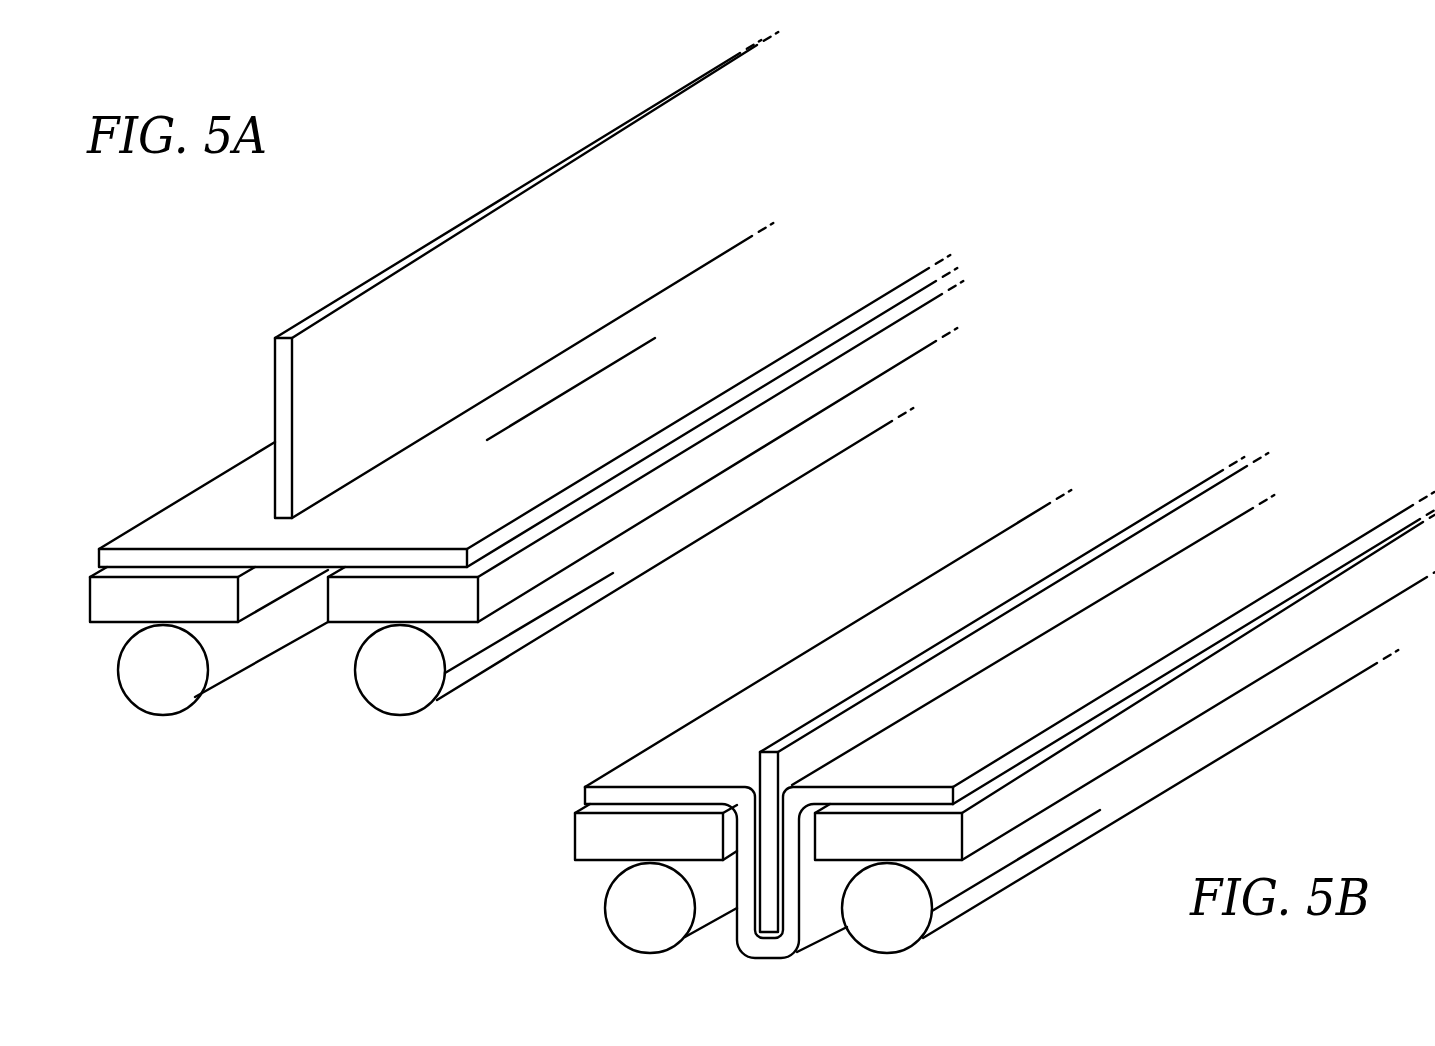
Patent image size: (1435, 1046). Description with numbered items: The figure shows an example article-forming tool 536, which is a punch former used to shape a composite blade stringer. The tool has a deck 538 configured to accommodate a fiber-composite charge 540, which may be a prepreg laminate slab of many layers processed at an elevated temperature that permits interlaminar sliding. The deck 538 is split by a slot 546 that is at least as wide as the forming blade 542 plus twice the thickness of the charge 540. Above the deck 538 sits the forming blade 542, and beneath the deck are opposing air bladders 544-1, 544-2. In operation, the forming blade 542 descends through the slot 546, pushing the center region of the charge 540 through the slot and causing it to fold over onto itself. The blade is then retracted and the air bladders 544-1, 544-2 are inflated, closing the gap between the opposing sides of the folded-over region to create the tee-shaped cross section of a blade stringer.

In FIG. 5A, the article-forming tool 536 is at (920, 211).
In FIG. 5B, the article-forming tool 536 is at (493, 838).
In FIG. 5A, the deck 538 is at (145, 608).
In FIG. 5B, the deck 538 is at (630, 846).
In FIG. 5A, the fiber-composite charge 540 is at (420, 500).
In FIG. 5B, the fiber-composite charge 540 is at (692, 761).
In FIG. 5A, the forming blade 542 is at (535, 279).
In FIG. 5B, the forming blade 542 is at (1014, 692).
In FIG. 5A, the air bladder 544-1 is at (134, 681).
In FIG. 5B, the air bladder 544-1 is at (621, 919).
In FIG. 5A, the air bladder 544-2 is at (372, 681).
In FIG. 5B, the air bladder 544-2 is at (859, 919).
In FIG. 5A, the slot 546 is at (297, 612).